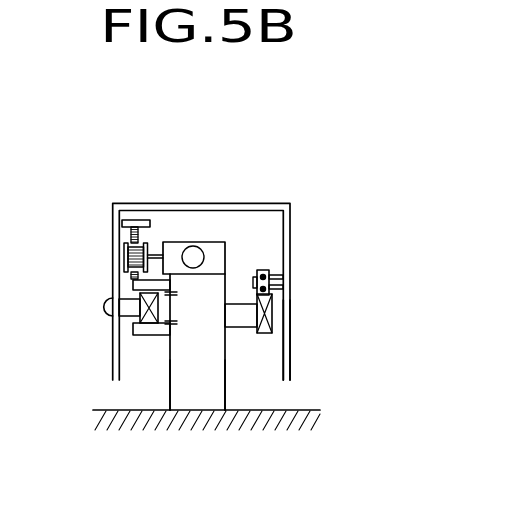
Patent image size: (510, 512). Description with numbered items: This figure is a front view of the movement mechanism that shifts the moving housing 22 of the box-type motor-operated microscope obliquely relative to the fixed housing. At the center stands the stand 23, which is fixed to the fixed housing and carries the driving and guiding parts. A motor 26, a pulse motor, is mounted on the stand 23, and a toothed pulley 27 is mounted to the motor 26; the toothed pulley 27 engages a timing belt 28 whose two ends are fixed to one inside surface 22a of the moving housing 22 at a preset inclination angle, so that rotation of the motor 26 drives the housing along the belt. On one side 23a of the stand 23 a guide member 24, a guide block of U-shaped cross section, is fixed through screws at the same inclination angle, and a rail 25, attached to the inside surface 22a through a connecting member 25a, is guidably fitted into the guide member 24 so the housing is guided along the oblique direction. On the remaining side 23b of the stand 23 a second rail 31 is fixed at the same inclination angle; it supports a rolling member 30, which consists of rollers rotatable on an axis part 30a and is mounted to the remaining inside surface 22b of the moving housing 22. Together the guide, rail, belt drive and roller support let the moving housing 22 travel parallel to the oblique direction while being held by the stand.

The moving housing 22 is at (180, 203).
The inside surface of the moving housing 22a is at (121, 276).
The remaining inside surface of the moving housing 22b is at (285, 340).
The stand 23 is at (205, 388).
The one side of the stand 23a is at (170, 376).
The remaining side of the stand 23b is at (226, 381).
The guide member 24 is at (162, 335).
The rail 25 is at (145, 334).
The connecting member 25a is at (122, 316).
The motor 26 is at (203, 241).
The toothed pulley 27 is at (150, 222).
The timing belt 28 is at (130, 232).
The rolling member 30 is at (262, 270).
The axis part 30a is at (271, 277).
The second rail 31 is at (262, 334).